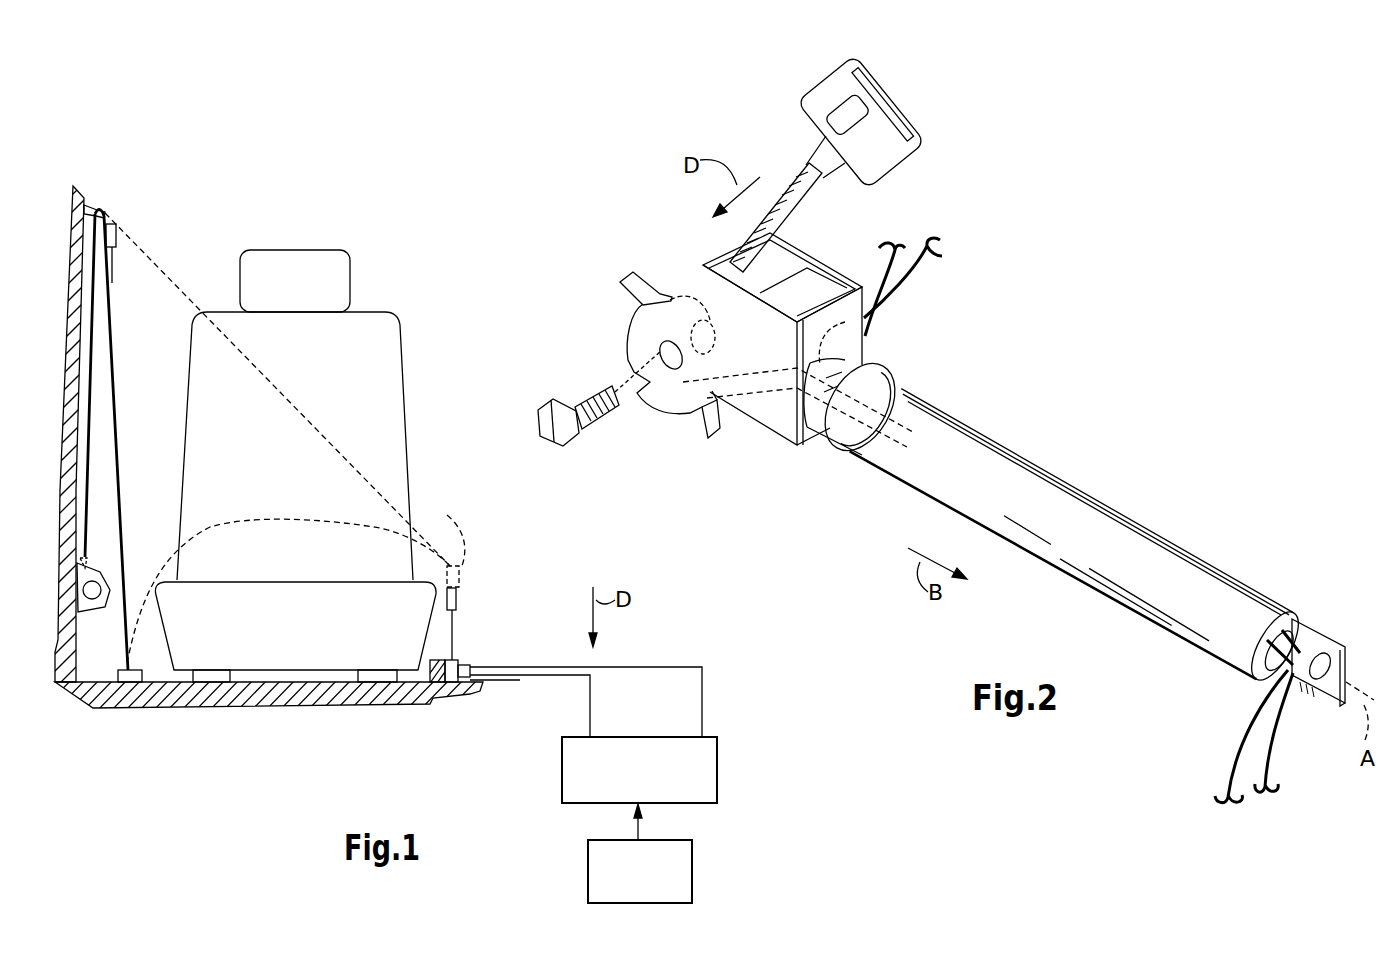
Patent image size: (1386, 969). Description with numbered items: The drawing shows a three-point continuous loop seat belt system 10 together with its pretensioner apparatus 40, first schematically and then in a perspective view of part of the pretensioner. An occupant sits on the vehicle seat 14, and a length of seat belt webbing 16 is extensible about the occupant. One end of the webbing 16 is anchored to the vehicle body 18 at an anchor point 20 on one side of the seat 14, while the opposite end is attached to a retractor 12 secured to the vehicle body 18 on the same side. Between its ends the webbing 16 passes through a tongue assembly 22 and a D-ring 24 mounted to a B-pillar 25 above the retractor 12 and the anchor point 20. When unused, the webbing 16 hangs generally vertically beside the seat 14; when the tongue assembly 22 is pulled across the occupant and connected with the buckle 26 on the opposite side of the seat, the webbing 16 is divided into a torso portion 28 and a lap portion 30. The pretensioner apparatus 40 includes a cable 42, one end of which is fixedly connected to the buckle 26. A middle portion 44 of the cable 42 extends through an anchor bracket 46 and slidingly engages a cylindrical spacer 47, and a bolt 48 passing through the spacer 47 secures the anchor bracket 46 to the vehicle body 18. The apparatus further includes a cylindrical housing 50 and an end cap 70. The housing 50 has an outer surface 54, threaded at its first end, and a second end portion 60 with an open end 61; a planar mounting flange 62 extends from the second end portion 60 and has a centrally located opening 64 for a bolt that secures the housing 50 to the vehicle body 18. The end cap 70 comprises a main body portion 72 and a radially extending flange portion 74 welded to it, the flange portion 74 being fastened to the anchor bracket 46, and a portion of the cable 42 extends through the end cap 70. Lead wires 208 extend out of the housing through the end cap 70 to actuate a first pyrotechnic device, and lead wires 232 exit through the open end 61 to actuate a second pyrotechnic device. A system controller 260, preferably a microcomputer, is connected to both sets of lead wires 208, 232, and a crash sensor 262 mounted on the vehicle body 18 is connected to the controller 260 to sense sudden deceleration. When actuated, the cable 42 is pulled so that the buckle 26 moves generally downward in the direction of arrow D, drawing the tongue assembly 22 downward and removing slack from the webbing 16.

In FIG. 1, the seat belt system 10 is at (213, 236).
In FIG. 1, the retractor 12 is at (105, 578).
In FIG. 1, the vehicle seat 14 is at (405, 427).
In FIG. 1, the seat belt webbing 16 is at (120, 440).
In FIG. 1, the vehicle body 18 is at (86, 708).
In FIG. 1, the anchor point 20 is at (140, 670).
In FIG. 1, the tongue assembly 22 is at (116, 236).
In FIG. 1, the D-ring 24 is at (92, 210).
In FIG. 1, the B-pillar 25 is at (72, 314).
In FIG. 1, the buckle 26 is at (459, 605).
In FIG. 2, the buckle 26 is at (865, 182).
In FIG. 1, the torso portion 28 is at (310, 420).
In FIG. 1, the lap portion 30 is at (290, 520).
In FIG. 1, the pretensioner apparatus 40 is at (463, 656).
In FIG. 2, the pretensioner apparatus 40 is at (1118, 440).
In FIG. 2, the cable 42 is at (730, 262).
In FIG. 2, the middle portion of the cable 44 is at (738, 380).
In FIG. 2, the anchor bracket 46 is at (770, 402).
In FIG. 2, the cylindrical spacer 47 is at (673, 290).
In FIG. 1, the bolt 48 is at (560, 675).
In FIG. 2, the bolt 48 is at (548, 412).
In FIG. 2, the cylindrical housing 50 is at (1120, 508).
In FIG. 2, the outer surface 54 is at (1085, 600).
In FIG. 2, the second end portion 60 is at (1277, 622).
In FIG. 2, the open end 61 is at (1288, 640).
In FIG. 2, the mounting flange 62 is at (1324, 645).
In FIG. 2, the opening 64 is at (1316, 690).
In FIG. 2, the end cap 70 is at (897, 362).
In FIG. 2, the main body portion 72 is at (822, 433).
In FIG. 2, the flange portion 74 is at (862, 348).
In FIG. 1, the lead wires 208 is at (634, 667).
In FIG. 2, the lead wires 208 is at (905, 282).
In FIG. 1, the lead wires 232 is at (510, 686).
In FIG. 2, the lead wires 232 is at (1250, 762).
In FIG. 1, the system controller 260 is at (712, 795).
In FIG. 1, the crash sensor 262 is at (692, 862).